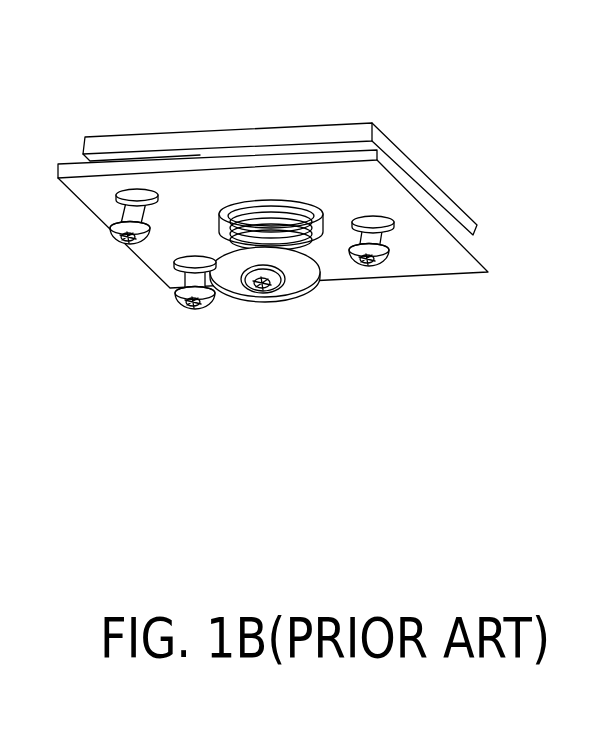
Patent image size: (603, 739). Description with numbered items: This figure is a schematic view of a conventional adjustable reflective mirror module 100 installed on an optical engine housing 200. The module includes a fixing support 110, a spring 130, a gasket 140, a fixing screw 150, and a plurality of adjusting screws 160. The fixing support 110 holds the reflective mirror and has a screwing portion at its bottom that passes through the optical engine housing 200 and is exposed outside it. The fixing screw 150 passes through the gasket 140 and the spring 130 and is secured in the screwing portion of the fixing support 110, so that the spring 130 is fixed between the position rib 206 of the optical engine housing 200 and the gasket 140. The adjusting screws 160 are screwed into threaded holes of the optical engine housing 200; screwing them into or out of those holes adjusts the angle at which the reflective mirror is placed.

The adjustable reflective mirror module 100 is at (488, 464).
The fixing support 110 is at (347, 132).
The spring 130 is at (272, 228).
The gasket 140 is at (303, 282).
The fixing screw 150 is at (268, 292).
The adjusting screws 160 is at (125, 243).
The optical engine housing 200 is at (445, 256).
The position rib 206 is at (305, 220).